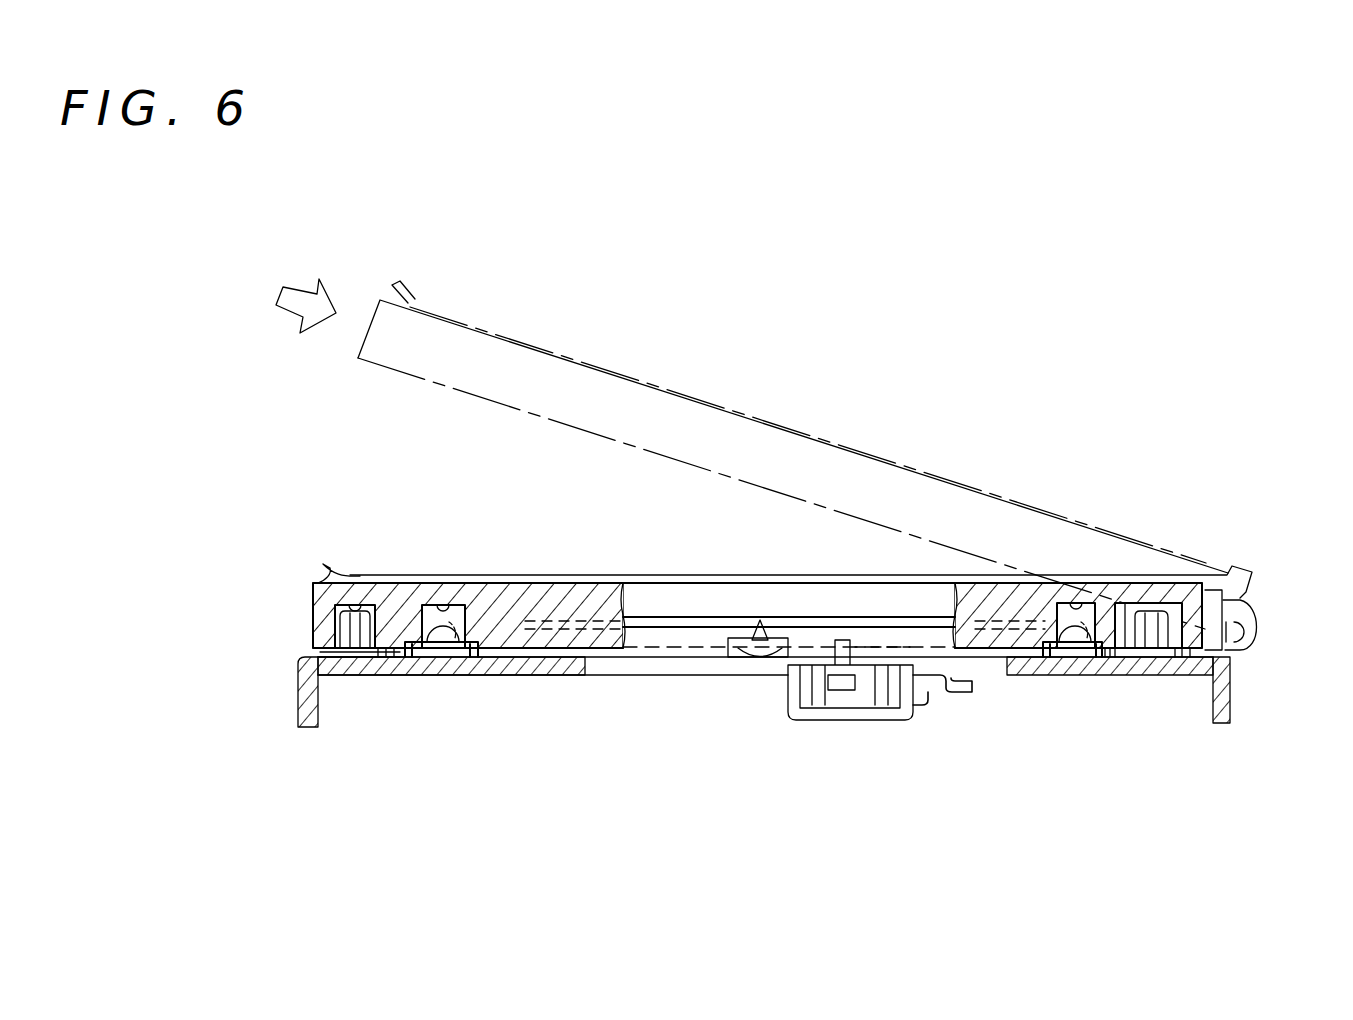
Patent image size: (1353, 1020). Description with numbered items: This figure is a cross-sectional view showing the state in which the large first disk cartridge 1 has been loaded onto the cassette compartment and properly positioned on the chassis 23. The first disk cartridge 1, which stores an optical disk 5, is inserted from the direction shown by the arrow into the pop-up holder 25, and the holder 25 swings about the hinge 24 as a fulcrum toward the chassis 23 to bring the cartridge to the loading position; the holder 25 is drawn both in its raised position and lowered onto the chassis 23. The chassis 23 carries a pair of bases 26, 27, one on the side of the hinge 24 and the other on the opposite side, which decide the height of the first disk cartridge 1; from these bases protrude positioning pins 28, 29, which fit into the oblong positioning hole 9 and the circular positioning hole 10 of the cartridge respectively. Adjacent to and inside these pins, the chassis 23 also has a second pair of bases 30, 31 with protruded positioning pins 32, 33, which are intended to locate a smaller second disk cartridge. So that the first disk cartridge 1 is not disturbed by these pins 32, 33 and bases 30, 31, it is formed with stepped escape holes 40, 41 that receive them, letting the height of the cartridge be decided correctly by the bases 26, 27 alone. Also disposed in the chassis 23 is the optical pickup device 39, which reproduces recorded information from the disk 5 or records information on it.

The first disk cartridge 1 is at (548, 592).
The disk 5 is at (727, 616).
The positioning hole 9 is at (1169, 602).
The positioning hole 10 is at (364, 605).
The chassis 23 is at (543, 665).
The hinge 24 is at (1258, 636).
The pop-up holder 25 is at (678, 576).
The base 26 is at (1130, 662).
The base 27 is at (343, 657).
The positioning pin 28 is at (1153, 660).
The positioning pin 29 is at (354, 648).
The base 30 is at (1053, 657).
The base 31 is at (427, 657).
The positioning pin 32 is at (1082, 648).
The positioning pin 33 is at (443, 645).
The optical pickup device 39 is at (758, 657).
The stepped escape hole 40 is at (1083, 602).
The stepped escape hole 41 is at (450, 604).